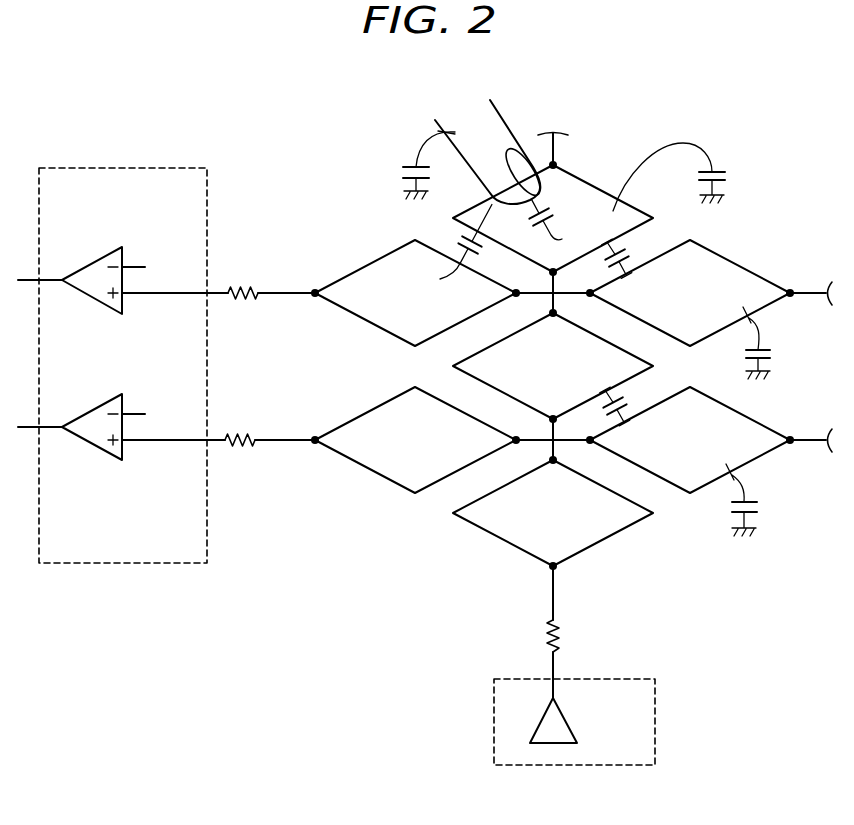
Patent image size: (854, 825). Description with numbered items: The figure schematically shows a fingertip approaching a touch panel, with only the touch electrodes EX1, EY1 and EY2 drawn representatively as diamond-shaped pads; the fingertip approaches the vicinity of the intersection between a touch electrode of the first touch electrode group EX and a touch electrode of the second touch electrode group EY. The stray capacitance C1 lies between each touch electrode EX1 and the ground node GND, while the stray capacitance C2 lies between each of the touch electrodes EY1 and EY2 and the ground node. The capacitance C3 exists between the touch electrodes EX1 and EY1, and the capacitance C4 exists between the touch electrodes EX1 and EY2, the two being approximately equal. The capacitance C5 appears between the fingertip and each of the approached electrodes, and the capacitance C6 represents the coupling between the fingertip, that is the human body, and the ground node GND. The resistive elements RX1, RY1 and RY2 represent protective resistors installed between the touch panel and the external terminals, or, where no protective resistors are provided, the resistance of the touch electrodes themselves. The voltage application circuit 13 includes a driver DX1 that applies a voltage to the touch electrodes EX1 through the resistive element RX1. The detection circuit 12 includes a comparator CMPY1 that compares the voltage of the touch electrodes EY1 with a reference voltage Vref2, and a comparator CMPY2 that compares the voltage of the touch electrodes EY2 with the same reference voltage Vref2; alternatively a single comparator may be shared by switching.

The detection circuit 12 is at (163, 167).
The voltage application circuit 13 is at (657, 718).
The comparator CMPY2 is at (95, 303).
The comparator CMPY1 is at (95, 450).
The reference voltage Vref2 is at (158, 341).
The resistive element RY2 is at (240, 287).
The resistive element RY1 is at (238, 434).
The resistive element RX1 is at (545, 638).
The driver DX1 is at (568, 721).
The stray capacitance C1 is at (685, 177).
The stray capacitance C2 is at (765, 421).
The capacitance C3 is at (629, 403).
The capacitance C4 is at (631, 256).
The capacitance C5 is at (511, 236).
The capacitance C6 is at (415, 165).
The ground node GND is at (758, 395).